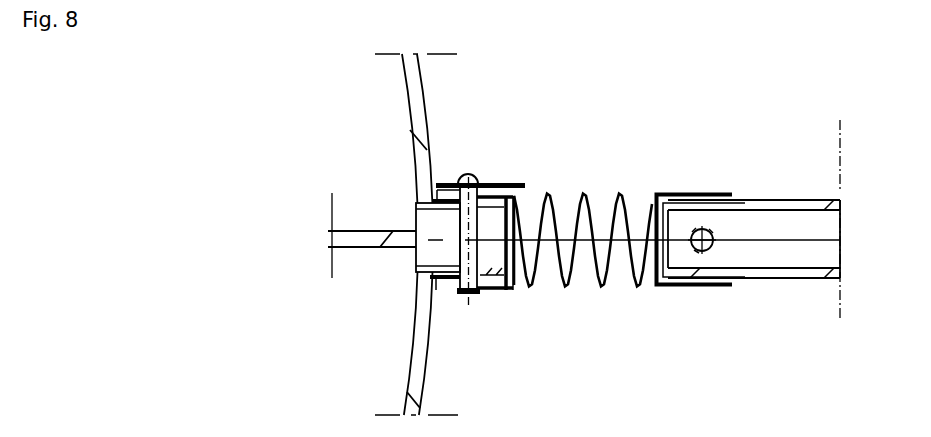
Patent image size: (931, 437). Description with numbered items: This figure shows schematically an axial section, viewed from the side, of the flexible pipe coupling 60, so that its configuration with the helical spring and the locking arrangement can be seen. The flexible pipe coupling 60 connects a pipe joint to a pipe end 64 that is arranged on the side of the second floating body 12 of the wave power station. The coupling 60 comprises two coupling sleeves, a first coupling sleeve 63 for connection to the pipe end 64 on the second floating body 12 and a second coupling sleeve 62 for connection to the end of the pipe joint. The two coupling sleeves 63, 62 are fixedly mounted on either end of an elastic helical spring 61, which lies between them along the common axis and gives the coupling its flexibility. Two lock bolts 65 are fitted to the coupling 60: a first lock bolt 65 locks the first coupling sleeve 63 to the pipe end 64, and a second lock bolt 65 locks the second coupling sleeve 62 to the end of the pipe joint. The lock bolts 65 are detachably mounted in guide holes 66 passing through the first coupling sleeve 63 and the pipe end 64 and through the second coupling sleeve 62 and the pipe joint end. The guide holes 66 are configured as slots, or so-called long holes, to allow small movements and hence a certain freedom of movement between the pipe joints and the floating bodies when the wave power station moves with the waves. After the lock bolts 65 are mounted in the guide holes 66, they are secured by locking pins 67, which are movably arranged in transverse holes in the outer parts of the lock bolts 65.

The second floating body 12 is at (429, 133).
The flexible pipe coupling 60 is at (605, 322).
The elastic helical spring 61 is at (550, 193).
The second coupling sleeve 62 is at (673, 191).
The first coupling sleeve 63 is at (515, 290).
The pipe end 64 is at (435, 284).
The lock bolt 65 is at (478, 290).
The guide hole 66 is at (705, 257).
The locking pin 67 is at (505, 182).